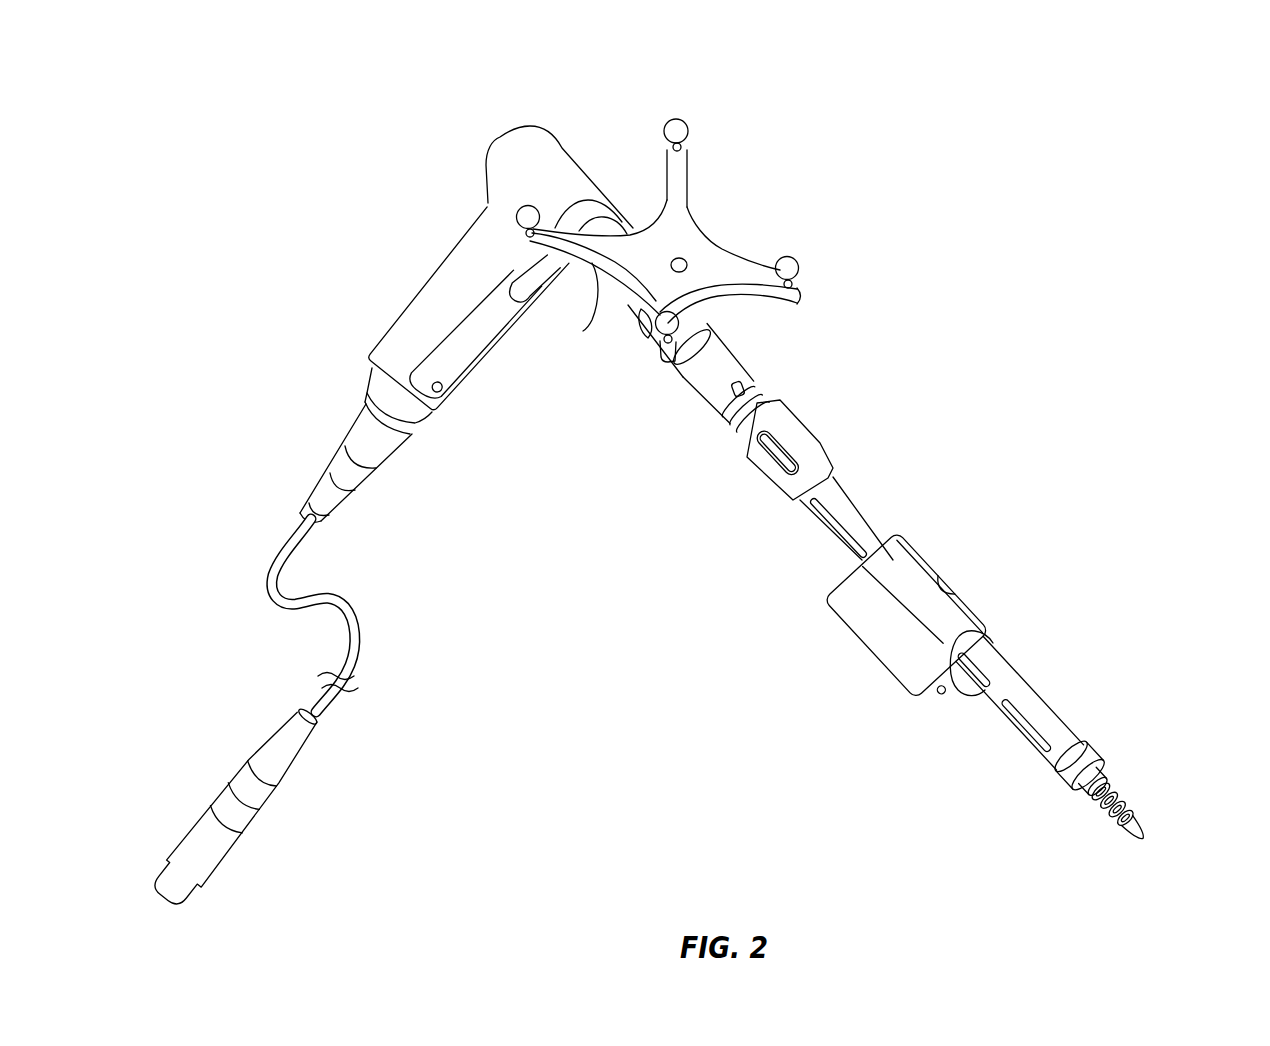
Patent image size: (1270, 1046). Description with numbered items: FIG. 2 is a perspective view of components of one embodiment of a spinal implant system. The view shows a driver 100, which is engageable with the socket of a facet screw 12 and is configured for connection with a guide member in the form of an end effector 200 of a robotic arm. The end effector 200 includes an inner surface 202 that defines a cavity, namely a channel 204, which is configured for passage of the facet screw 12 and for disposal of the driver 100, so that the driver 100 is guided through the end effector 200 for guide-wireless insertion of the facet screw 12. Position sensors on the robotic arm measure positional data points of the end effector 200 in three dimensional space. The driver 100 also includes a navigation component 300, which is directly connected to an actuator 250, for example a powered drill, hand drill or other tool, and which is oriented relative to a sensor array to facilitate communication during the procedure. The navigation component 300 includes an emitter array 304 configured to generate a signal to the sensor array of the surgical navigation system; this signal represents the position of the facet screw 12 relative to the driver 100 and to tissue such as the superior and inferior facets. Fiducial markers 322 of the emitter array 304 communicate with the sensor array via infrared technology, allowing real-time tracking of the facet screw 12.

The facet screw 12 is at (1155, 758).
The driver 100 is at (1085, 665).
The end effector 200 is at (914, 620).
The inner surface 202 is at (895, 570).
The channel 204 is at (977, 659).
The actuator 250 is at (370, 221).
The navigation component 300 is at (803, 114).
The emitter array 304 is at (634, 138).
The fiducial markers 322 is at (676, 131).